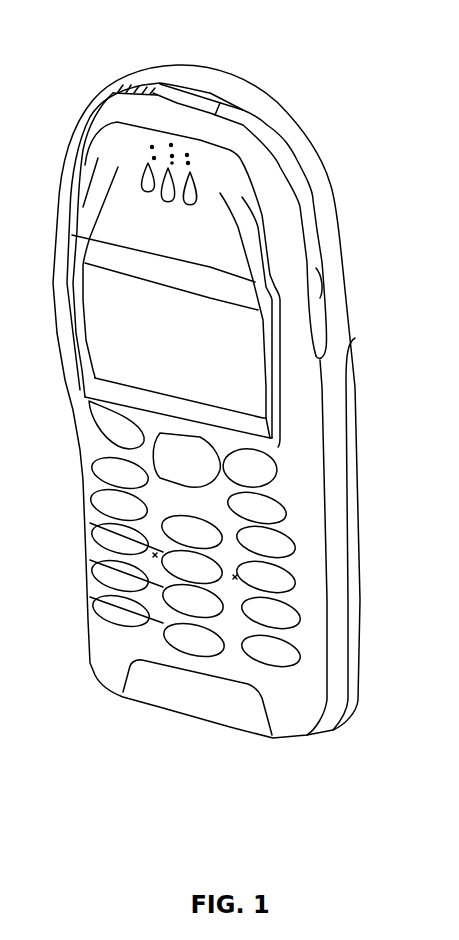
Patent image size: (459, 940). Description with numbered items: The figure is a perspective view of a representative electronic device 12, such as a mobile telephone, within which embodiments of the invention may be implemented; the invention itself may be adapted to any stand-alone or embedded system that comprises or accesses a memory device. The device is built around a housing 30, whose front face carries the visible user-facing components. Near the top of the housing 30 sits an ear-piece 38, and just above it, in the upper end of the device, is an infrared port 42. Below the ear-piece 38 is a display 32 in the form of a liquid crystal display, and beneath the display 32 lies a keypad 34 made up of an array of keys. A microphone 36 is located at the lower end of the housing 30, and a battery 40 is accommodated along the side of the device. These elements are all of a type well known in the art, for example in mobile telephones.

The electronic device 12 is at (300, 72).
The housing 30 is at (323, 200).
The display 32 is at (247, 378).
The keypad 34 is at (268, 657).
The microphone 36 is at (147, 688).
The ear-piece 38 is at (147, 165).
The battery 40 is at (358, 638).
The infrared port 42 is at (187, 92).